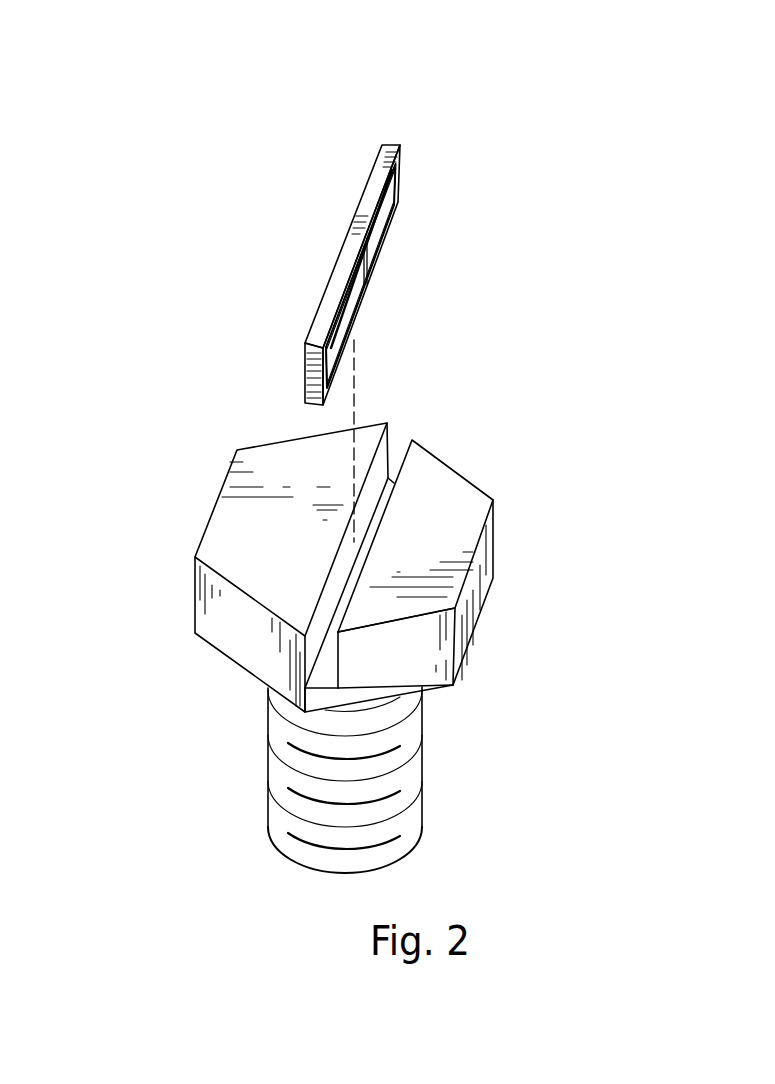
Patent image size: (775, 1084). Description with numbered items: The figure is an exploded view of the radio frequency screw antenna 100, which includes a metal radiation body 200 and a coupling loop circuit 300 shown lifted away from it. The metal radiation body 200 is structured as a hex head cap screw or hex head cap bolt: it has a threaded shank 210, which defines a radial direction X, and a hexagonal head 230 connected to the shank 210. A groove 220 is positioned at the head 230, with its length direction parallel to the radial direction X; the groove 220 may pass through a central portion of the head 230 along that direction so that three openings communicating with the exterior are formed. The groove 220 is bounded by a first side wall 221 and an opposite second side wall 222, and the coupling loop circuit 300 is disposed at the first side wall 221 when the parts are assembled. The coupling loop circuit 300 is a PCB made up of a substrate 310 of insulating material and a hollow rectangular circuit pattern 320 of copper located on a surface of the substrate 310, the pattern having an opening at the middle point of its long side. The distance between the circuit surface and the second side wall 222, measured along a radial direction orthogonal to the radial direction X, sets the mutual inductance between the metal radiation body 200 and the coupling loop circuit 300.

The radio frequency screw antenna 100 is at (177, 72).
The metal radiation body 200 is at (620, 420).
The shank 210 is at (408, 727).
The groove 220 is at (398, 443).
The first side wall 221 is at (362, 500).
The second side wall 222 is at (320, 664).
The head 230 is at (443, 538).
The coupling loop circuit 300 is at (545, 77).
The substrate 310 is at (392, 138).
The hollow rectangular circuit pattern 320 is at (398, 175).